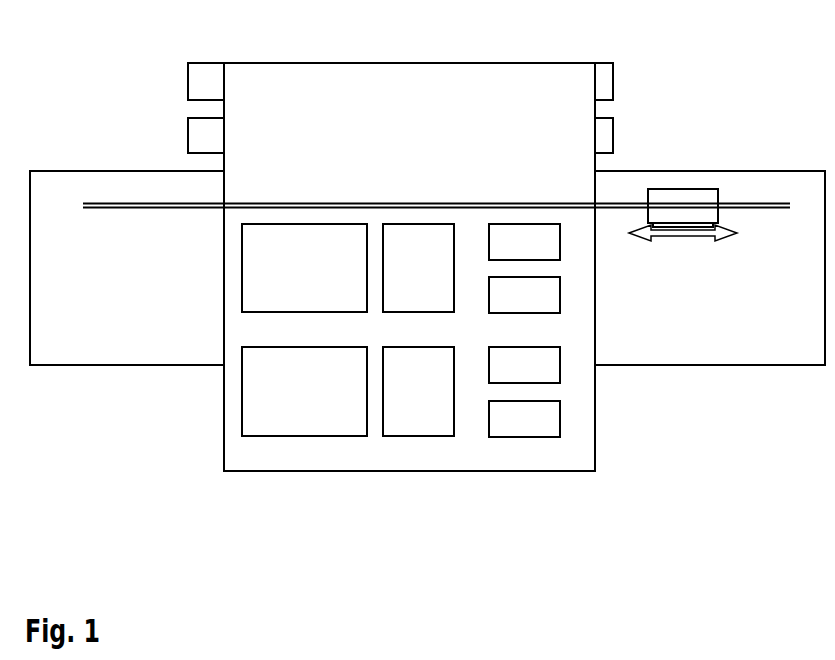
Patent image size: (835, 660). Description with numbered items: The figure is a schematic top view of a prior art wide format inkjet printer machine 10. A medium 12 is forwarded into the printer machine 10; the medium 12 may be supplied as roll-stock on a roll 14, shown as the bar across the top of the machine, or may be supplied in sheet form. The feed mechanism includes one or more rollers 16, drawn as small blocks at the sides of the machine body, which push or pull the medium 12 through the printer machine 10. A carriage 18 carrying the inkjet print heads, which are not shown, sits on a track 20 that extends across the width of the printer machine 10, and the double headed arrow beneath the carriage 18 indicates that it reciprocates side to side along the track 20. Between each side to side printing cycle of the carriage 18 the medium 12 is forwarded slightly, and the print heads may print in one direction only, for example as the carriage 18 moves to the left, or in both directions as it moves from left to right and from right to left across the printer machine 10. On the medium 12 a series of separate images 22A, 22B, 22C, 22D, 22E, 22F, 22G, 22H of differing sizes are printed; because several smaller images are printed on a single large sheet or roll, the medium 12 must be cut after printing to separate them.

The printer machine 10 is at (732, 377).
The medium 12 is at (409, 267).
The roll 14 is at (494, 63).
The rollers 16 is at (609, 128).
The carriage 18 is at (666, 189).
The track 20 is at (759, 204).
The image 22A is at (304, 268).
The image 22B is at (418, 268).
The image 22C is at (524, 242).
The image 22D is at (524, 295).
The image 22E is at (304, 391).
The image 22F is at (418, 391).
The image 22G is at (524, 365).
The image 22H is at (524, 419).